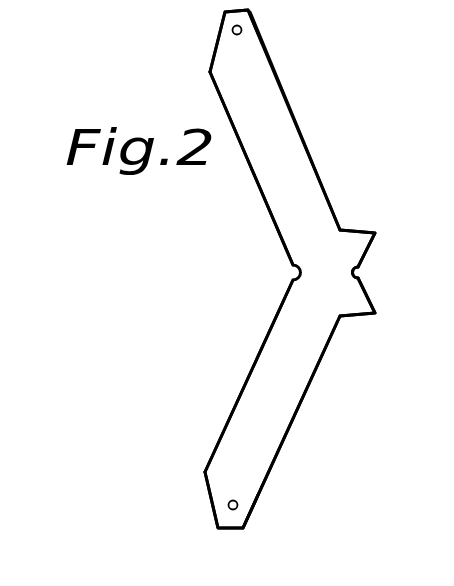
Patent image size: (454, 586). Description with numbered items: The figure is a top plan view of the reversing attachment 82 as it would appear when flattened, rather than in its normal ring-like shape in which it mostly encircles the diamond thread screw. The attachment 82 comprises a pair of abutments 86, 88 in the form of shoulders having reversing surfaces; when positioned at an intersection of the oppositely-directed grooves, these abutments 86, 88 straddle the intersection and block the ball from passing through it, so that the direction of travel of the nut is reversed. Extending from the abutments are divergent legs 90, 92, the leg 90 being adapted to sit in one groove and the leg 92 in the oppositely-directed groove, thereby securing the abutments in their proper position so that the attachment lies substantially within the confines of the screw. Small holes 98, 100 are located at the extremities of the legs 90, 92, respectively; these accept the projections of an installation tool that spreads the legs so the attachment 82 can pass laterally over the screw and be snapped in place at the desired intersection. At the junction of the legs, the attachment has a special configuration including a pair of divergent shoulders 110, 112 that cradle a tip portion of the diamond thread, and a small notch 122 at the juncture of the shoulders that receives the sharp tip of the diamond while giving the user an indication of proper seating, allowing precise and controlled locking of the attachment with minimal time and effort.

The reversing attachment 82 is at (339, 349).
The abutment 86 is at (214, 38).
The abutment 88 is at (202, 491).
The leg 90 is at (288, 162).
The leg 92 is at (268, 418).
The hole 98 is at (242, 29).
The hole 100 is at (238, 505).
The shoulder 110 is at (373, 245).
The shoulder 112 is at (382, 302).
The notch 122 is at (360, 272).